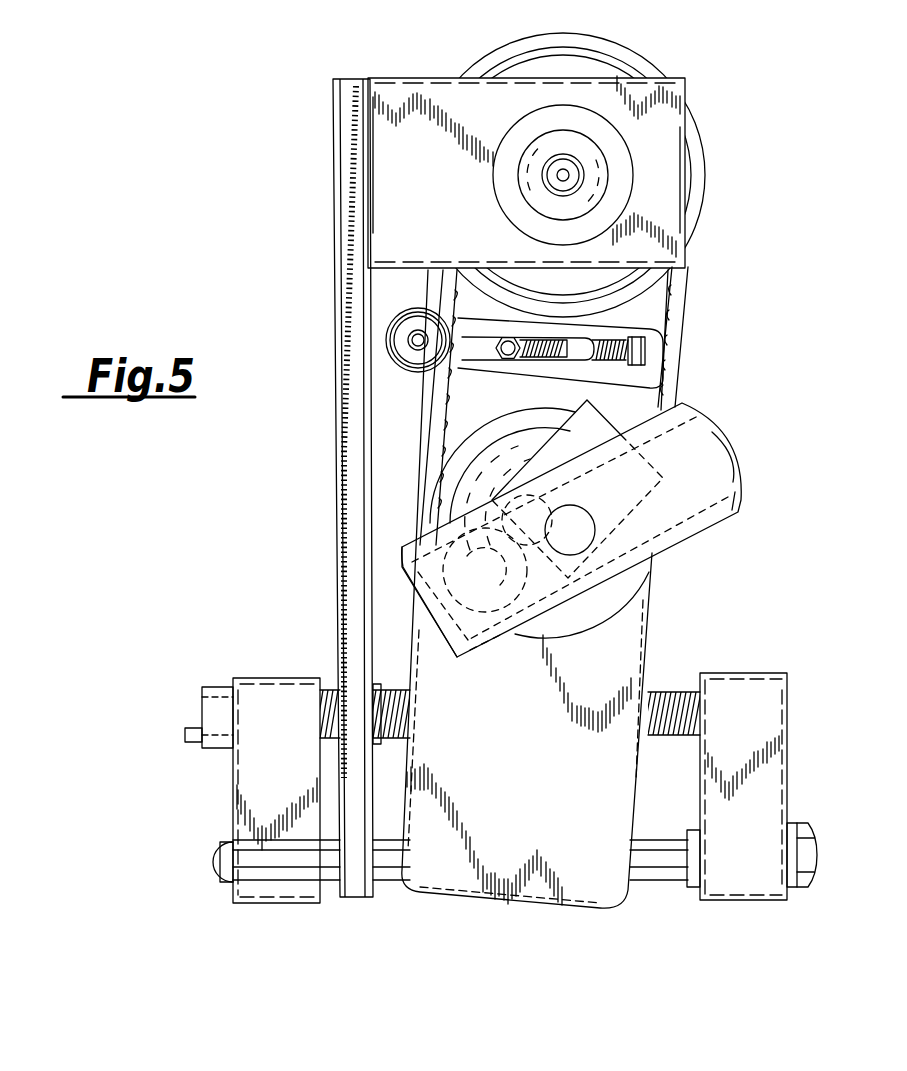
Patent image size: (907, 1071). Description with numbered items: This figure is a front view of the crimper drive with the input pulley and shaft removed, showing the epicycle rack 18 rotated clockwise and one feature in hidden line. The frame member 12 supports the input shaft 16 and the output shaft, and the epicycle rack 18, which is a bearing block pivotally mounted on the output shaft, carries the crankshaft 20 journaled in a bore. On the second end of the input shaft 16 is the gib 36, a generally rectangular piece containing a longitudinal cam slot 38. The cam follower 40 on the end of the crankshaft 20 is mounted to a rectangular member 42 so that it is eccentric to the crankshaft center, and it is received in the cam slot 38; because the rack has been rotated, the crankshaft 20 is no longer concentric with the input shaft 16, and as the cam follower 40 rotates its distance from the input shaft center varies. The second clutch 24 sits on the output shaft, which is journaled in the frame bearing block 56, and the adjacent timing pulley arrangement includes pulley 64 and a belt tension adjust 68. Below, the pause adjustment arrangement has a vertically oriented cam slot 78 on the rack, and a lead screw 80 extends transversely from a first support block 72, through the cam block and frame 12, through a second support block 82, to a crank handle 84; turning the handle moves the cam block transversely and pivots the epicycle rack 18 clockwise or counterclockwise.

The frame member 12 is at (337, 160).
The input shaft 16 is at (568, 518).
The epicycle rack 18 is at (622, 884).
The crankshaft 20 is at (508, 492).
The second clutch 24 is at (696, 155).
The gib 36 is at (605, 545).
The cam slot 38 is at (710, 424).
The cam follower 40 is at (435, 532).
The rectangular member 42 is at (595, 432).
The frame bearing block 56 is at (440, 82).
The pulley 64 is at (515, 636).
The belt tension adjust 68 is at (578, 358).
The first support block 72 is at (760, 815).
The cam slot 78 is at (642, 840).
The lead screw 80 is at (662, 700).
The second support block 82 is at (241, 792).
The crank handle 84 is at (219, 687).